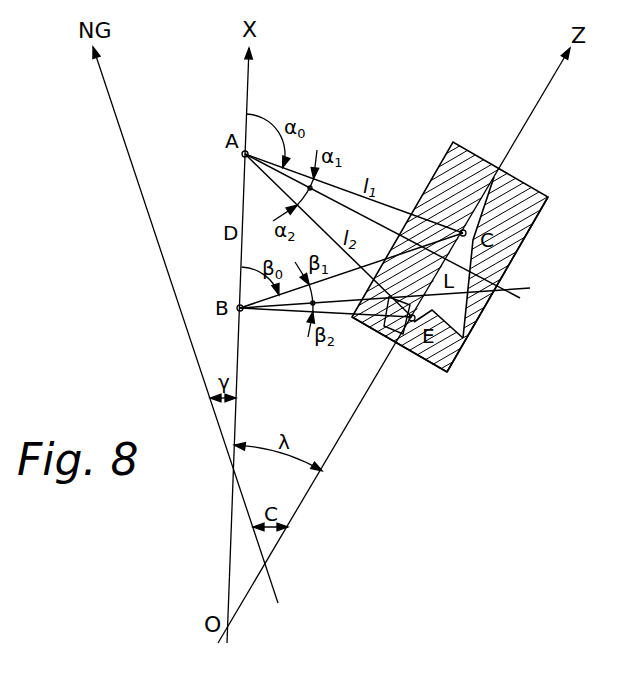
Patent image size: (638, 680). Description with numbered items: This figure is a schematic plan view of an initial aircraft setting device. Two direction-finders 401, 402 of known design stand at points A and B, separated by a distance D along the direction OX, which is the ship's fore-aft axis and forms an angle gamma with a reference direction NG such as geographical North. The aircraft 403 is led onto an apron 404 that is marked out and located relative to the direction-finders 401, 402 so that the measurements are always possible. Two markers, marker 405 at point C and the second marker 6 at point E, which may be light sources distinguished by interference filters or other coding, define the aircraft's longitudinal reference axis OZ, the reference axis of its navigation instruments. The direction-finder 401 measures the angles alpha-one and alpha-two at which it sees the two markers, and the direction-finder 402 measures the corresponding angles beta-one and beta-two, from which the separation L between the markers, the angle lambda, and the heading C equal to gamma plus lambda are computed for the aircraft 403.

The direction-finder 401 is at (242, 158).
The direction-finder 402 is at (238, 305).
The aircraft 403 is at (474, 259).
The apron 404 is at (458, 352).
The marker 405 is at (458, 224).
The detector element 6 is at (403, 336).